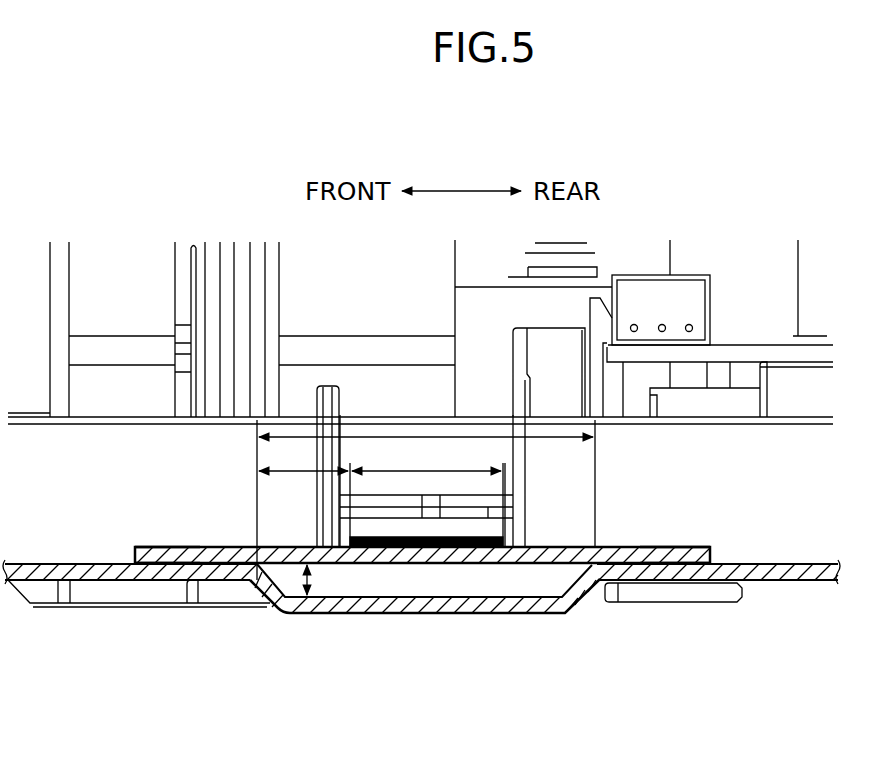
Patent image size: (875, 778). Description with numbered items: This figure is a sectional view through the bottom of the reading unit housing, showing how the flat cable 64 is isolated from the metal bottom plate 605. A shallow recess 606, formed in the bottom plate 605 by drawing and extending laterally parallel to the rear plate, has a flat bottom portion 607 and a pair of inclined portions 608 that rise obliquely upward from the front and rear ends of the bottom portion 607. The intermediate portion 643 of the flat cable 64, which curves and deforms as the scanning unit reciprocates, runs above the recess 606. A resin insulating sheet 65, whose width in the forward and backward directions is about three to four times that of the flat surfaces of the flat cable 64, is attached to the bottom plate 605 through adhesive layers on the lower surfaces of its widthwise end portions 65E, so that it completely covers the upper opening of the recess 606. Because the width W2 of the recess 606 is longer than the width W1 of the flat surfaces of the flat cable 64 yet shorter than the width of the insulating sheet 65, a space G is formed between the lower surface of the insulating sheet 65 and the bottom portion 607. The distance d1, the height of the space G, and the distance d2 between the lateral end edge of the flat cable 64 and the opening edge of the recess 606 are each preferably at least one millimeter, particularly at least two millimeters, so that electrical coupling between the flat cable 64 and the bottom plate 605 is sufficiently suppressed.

The flat cable 64 is at (435, 576).
The intermediate portion 643 is at (455, 542).
The insulating sheet 65 is at (366, 567).
The widthwise end portions 65E is at (180, 555).
The bottom plate 605 is at (45, 580).
The recess 606 is at (435, 648).
The bottom portion 607 is at (503, 593).
The inclined portions 608 is at (558, 575).
The space G is at (410, 587).
The width of the flat surfaces of the flat cable W1 is at (426, 494).
The width of the recess W2 is at (426, 492).
The distance between insulating sheet and bottom portion d1 is at (309, 578).
The distance between cable end edge and recess opening edge d2 is at (303, 457).